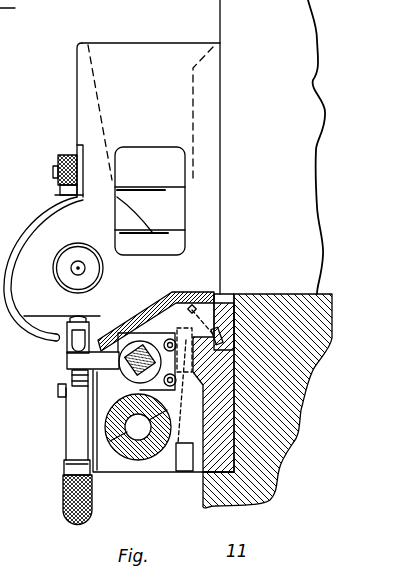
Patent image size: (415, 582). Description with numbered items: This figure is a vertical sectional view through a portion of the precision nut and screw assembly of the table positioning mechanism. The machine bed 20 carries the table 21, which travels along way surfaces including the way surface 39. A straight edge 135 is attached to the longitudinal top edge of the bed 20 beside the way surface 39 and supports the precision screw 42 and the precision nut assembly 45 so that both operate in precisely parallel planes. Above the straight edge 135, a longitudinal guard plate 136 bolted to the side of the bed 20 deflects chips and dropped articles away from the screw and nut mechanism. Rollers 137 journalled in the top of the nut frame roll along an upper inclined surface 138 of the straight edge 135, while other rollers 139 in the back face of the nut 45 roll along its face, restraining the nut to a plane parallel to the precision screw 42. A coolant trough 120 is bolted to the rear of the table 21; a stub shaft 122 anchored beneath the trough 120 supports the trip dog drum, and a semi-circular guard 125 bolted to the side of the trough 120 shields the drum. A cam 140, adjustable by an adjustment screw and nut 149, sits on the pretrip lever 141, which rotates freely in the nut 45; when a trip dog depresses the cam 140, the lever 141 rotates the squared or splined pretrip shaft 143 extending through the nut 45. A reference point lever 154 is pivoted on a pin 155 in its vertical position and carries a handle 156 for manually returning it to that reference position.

The bed 20 is at (280, 454).
The table 21 is at (233, 25).
The way surface 39 is at (291, 292).
The precision screw 42 is at (112, 433).
The precision nut assembly 45 is at (130, 468).
The coolant trough 120 is at (85, 78).
The stub shaft 122 is at (78, 255).
The semi-circular guard 125 is at (22, 214).
The straight edge 135 is at (200, 462).
The longitudinal guard plate 136 is at (127, 322).
The rollers 137 is at (219, 318).
The upper inclined surface 138 is at (217, 330).
The rollers 139 is at (184, 388).
The cam 140 is at (78, 343).
The pretrip lever 141 is at (98, 364).
The pretrip shaft 143 is at (146, 344).
The adjustment screw and nut 149 is at (68, 362).
The reference point lever 154 is at (72, 437).
The pin 155 is at (58, 387).
The handle 156 is at (72, 524).